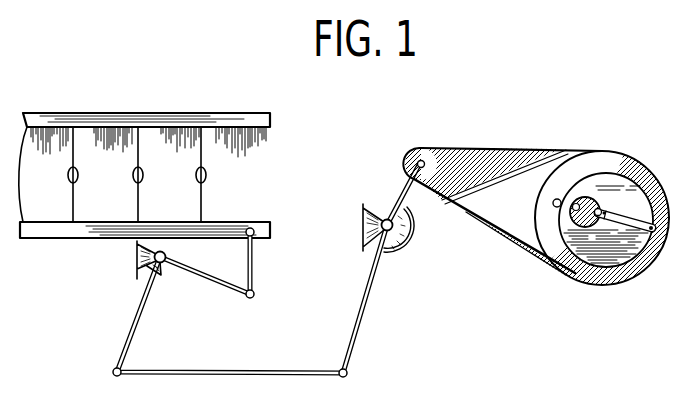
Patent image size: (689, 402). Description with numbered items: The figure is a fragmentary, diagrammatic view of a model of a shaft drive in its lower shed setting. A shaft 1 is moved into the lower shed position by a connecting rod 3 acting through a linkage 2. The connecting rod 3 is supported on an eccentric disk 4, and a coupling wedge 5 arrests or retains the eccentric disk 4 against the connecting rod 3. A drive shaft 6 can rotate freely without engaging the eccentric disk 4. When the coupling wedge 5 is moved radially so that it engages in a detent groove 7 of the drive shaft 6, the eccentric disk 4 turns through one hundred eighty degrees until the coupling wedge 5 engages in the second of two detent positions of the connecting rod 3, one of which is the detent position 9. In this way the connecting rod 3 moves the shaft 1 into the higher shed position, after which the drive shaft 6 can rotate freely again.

The shaft 1 is at (245, 121).
The linkage 2 is at (357, 328).
The connecting rod 3 is at (446, 175).
The eccentric disk 4 is at (593, 246).
The coupling wedge 5 is at (637, 232).
The drive shaft 6 is at (565, 225).
The detent groove 7 is at (603, 212).
The detent position 9 is at (554, 202).